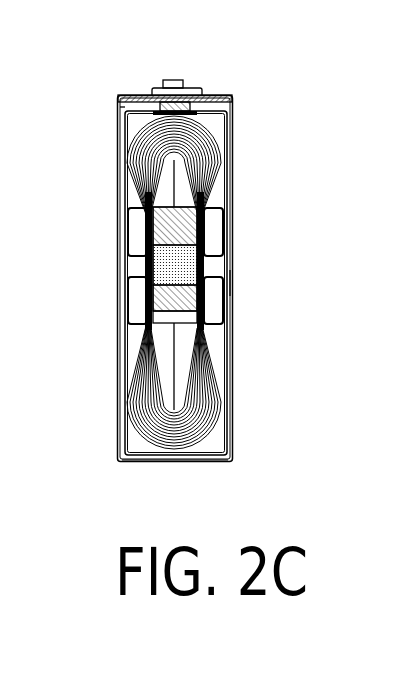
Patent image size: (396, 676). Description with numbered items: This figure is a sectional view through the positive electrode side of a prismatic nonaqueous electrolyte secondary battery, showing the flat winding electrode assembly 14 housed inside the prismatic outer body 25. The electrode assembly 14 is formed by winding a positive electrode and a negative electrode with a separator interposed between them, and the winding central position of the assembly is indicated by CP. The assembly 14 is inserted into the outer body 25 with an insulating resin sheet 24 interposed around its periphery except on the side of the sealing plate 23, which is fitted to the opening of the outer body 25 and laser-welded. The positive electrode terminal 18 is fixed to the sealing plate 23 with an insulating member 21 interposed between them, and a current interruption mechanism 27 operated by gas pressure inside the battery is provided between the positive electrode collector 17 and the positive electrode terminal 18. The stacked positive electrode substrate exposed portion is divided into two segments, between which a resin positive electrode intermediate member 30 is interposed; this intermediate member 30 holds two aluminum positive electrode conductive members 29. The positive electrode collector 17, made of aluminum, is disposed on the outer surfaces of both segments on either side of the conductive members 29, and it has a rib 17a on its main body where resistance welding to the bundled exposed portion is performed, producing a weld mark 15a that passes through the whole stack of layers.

The flat winding electrode assembly 14 is at (136, 350).
The weld mark 15a is at (205, 220).
The positive electrode collector 17 is at (228, 201).
The rib 17a is at (133, 313).
The positive electrode terminal 18 is at (165, 78).
The insulating member 21 is at (148, 92).
The sealing plate 23 is at (215, 93).
The insulating resin sheet 24 is at (120, 443).
The prismatic outer body 25 is at (200, 463).
The current interruption mechanism 27 is at (117, 107).
The positive electrode conductive member 29 is at (122, 210).
The positive electrode intermediate member 30 is at (213, 324).
The winding central position CP is at (235, 283).